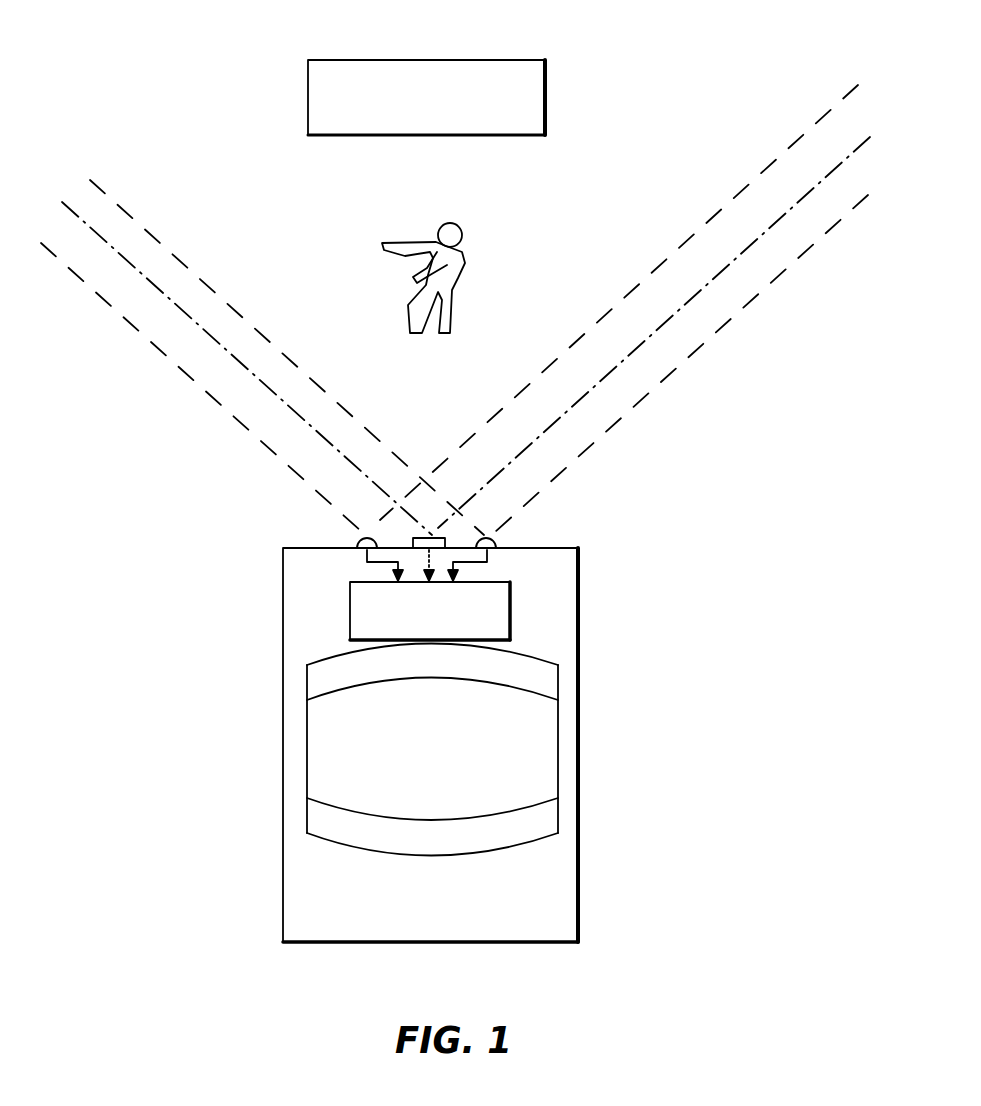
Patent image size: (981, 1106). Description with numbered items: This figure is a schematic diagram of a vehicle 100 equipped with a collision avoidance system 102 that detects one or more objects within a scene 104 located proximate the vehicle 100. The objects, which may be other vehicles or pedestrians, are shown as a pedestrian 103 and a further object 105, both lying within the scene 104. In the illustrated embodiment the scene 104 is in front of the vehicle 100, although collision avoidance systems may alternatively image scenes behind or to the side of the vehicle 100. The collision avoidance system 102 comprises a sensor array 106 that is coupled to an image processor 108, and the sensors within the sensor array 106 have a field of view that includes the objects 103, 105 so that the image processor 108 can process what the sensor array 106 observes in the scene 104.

The vehicle 100 is at (580, 636).
The collision avoidance system 102 is at (510, 540).
The object 103 is at (377, 277).
The scene 104 is at (765, 19).
The object 105 is at (478, 58).
The sensor array 106 is at (346, 542).
The image processor 108 is at (511, 602).